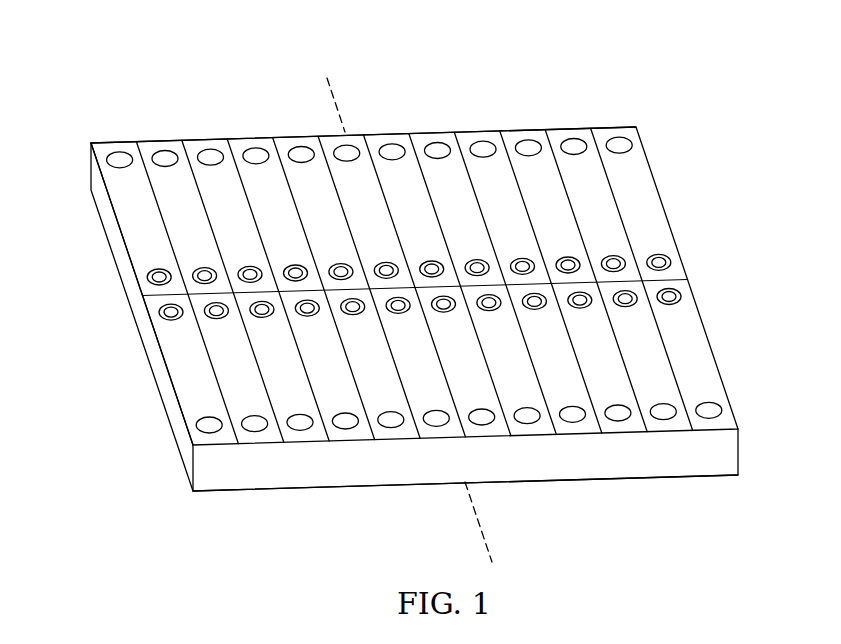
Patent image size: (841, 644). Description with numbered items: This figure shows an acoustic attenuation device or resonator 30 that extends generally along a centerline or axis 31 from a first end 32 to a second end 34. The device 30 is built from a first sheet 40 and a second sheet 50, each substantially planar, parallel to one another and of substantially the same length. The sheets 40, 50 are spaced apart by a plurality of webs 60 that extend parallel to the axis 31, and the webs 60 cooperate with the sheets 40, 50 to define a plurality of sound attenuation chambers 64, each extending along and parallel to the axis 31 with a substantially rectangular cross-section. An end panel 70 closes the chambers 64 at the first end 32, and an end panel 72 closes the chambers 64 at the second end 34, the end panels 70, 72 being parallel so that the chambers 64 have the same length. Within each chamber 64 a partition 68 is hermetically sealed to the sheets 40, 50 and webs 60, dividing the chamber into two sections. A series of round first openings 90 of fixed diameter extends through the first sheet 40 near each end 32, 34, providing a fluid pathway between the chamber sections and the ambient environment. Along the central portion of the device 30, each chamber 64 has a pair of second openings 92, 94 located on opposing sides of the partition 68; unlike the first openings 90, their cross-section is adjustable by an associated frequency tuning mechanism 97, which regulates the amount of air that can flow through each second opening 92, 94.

The acoustic attenuation device 30 is at (701, 145).
The axis 31 is at (488, 546).
The first end 32 is at (219, 523).
The second end 34 is at (125, 118).
The first sheet 40 is at (178, 390).
The second sheet 50 is at (262, 491).
The webs 60 is at (422, 175).
The sound attenuation chambers 64 is at (134, 222).
The partitions 68 is at (145, 292).
The end panel 70 is at (650, 477).
The end panel 72 is at (600, 126).
The first openings 90 is at (110, 156).
The second opening 92 is at (161, 314).
The second opening 94 is at (149, 276).
The frequency tuning mechanism 97 is at (673, 305).